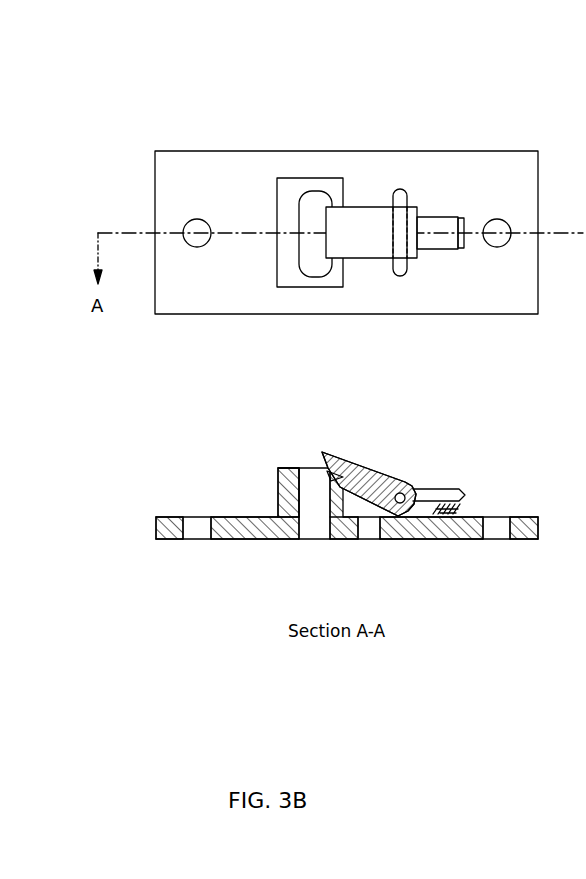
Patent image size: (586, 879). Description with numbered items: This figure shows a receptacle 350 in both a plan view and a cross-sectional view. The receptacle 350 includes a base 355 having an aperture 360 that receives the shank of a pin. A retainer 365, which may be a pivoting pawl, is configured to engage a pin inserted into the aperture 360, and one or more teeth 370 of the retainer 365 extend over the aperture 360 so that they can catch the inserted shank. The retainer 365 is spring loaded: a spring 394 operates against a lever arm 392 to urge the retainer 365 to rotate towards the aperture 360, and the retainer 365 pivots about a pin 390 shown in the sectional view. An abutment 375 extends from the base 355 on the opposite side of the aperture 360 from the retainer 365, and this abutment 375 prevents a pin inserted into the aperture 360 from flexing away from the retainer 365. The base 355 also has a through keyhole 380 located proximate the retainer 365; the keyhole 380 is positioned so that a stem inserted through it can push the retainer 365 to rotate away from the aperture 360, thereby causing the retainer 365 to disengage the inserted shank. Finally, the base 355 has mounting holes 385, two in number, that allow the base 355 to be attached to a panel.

The receptacle 350 is at (160, 86).
The base 355 is at (383, 151).
The aperture 360 is at (327, 190).
The retainer 365 is at (375, 258).
The teeth 370 is at (325, 455).
The abutment 375 is at (278, 493).
The keyhole 380 is at (363, 540).
The mounting holes 385 is at (196, 247).
The pivot pin 390 is at (404, 491).
The lever arm 392 is at (460, 490).
The spring 394 is at (462, 508).